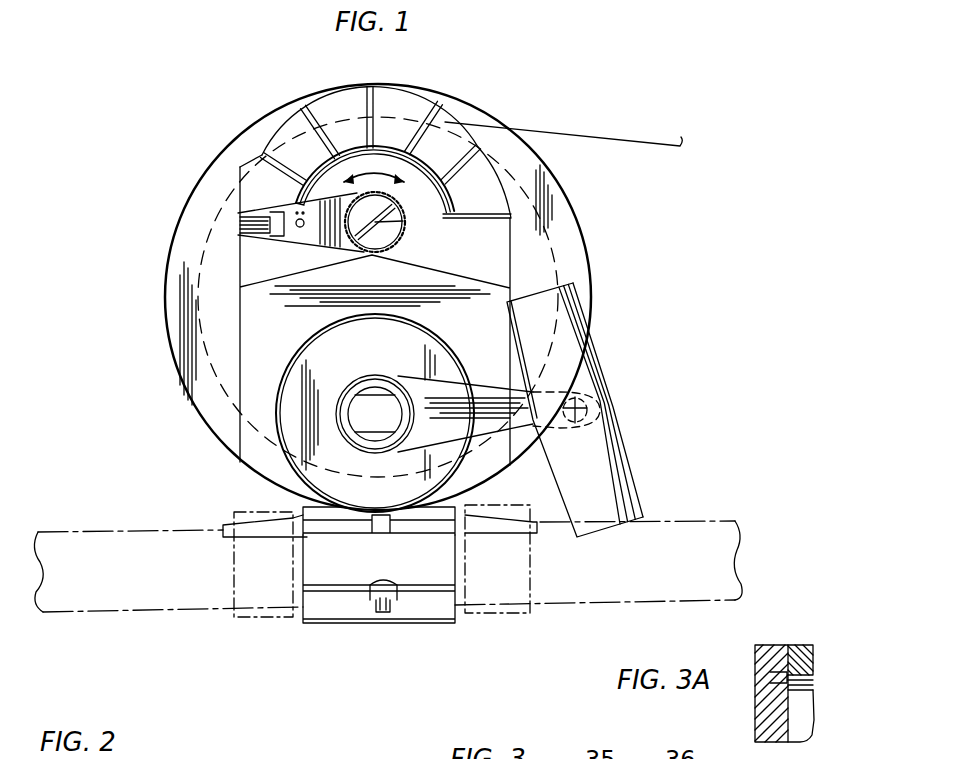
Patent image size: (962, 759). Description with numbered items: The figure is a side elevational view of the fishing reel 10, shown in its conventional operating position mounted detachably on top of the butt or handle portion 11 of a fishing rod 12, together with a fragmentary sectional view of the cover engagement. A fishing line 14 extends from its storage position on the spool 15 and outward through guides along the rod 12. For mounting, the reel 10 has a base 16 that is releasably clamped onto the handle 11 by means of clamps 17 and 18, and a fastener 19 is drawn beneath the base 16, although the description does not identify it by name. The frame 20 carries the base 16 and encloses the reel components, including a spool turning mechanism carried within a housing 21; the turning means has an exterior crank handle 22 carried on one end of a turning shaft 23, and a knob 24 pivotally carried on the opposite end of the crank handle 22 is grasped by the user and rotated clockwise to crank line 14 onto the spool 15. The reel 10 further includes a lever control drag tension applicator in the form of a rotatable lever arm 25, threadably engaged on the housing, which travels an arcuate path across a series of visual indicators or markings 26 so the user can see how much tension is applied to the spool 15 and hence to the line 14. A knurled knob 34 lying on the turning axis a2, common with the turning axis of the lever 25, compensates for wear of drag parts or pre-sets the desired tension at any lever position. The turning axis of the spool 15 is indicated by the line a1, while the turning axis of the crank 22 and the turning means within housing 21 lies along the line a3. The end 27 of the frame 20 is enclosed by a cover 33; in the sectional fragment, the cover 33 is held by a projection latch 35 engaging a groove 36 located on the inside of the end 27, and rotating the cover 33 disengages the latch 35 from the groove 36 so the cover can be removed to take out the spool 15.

In FIG. 1, the fishing reel 10 is at (578, 114).
In FIG. 1, the butt or handle portion 11 is at (118, 548).
In FIG. 1, the fishing rod 12 is at (673, 522).
In FIG. 1, the fishing line 14 is at (667, 148).
In FIG. 1, the spool 15 is at (560, 239).
In FIG. 1, the base 16 is at (297, 513).
In FIG. 1, the clamp 17 is at (243, 617).
In FIG. 1, the clamp 18 is at (490, 613).
In FIG. 1, the bolt 19 is at (388, 616).
In FIG. 1, the frame 20 is at (200, 193).
In FIG. 1, the housing 21 is at (238, 413).
In FIG. 1, the crank handle 22 is at (485, 385).
In FIG. 1, the turning shaft 23 is at (371, 396).
In FIG. 1, the knob 24 is at (615, 440).
In FIG. 1, the lever arm 25 is at (285, 213).
In FIG. 1, the visual indicators or markings 26 is at (305, 137).
In FIG. 1, the knurled knob 34 is at (400, 238).
In FIG. 1, the turning axis of the spool a1 is at (352, 300).
In FIG. 1, the turning axis of the knurled knob and lever a2 is at (403, 221).
In FIG. 1, the turning axis of the crank a3 is at (378, 414).
In FIG. 3A, the end 27 is at (805, 647).
In FIG. 3A, the cover 33 is at (800, 720).
In FIG. 3A, the projection latch 35 is at (790, 672).
In FIG. 3A, the groove 36 is at (781, 660).